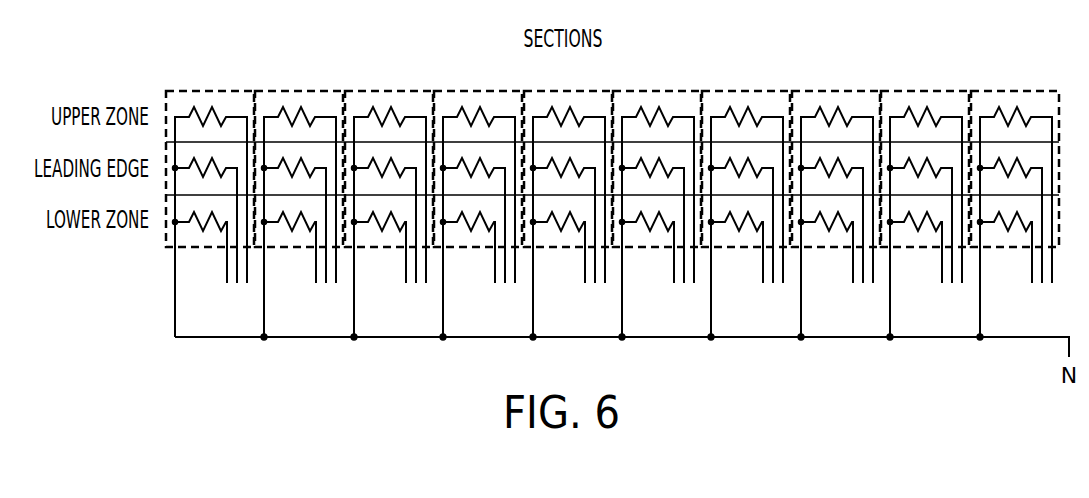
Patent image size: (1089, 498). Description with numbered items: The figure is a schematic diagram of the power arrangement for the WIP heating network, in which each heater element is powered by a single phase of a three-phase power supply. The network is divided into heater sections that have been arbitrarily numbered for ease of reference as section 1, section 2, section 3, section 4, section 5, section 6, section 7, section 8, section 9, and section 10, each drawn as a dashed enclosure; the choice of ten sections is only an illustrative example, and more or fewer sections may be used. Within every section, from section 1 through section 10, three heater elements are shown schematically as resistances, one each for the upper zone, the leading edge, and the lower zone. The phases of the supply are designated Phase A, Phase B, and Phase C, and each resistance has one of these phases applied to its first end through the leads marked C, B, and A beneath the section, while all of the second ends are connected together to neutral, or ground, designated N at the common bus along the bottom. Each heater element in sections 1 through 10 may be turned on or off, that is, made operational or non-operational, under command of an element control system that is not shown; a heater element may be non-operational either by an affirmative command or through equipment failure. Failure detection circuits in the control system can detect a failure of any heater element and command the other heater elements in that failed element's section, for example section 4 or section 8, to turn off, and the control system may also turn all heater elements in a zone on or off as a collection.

The section 1 is at (210, 199).
The section 2 is at (299, 200).
The section 3 is at (389, 200).
The section 4 is at (478, 200).
The section 5 is at (568, 200).
The section 6 is at (657, 200).
The section 7 is at (746, 200).
The section 8 is at (836, 200).
The section 9 is at (925, 200).
The section 10 is at (1015, 200).